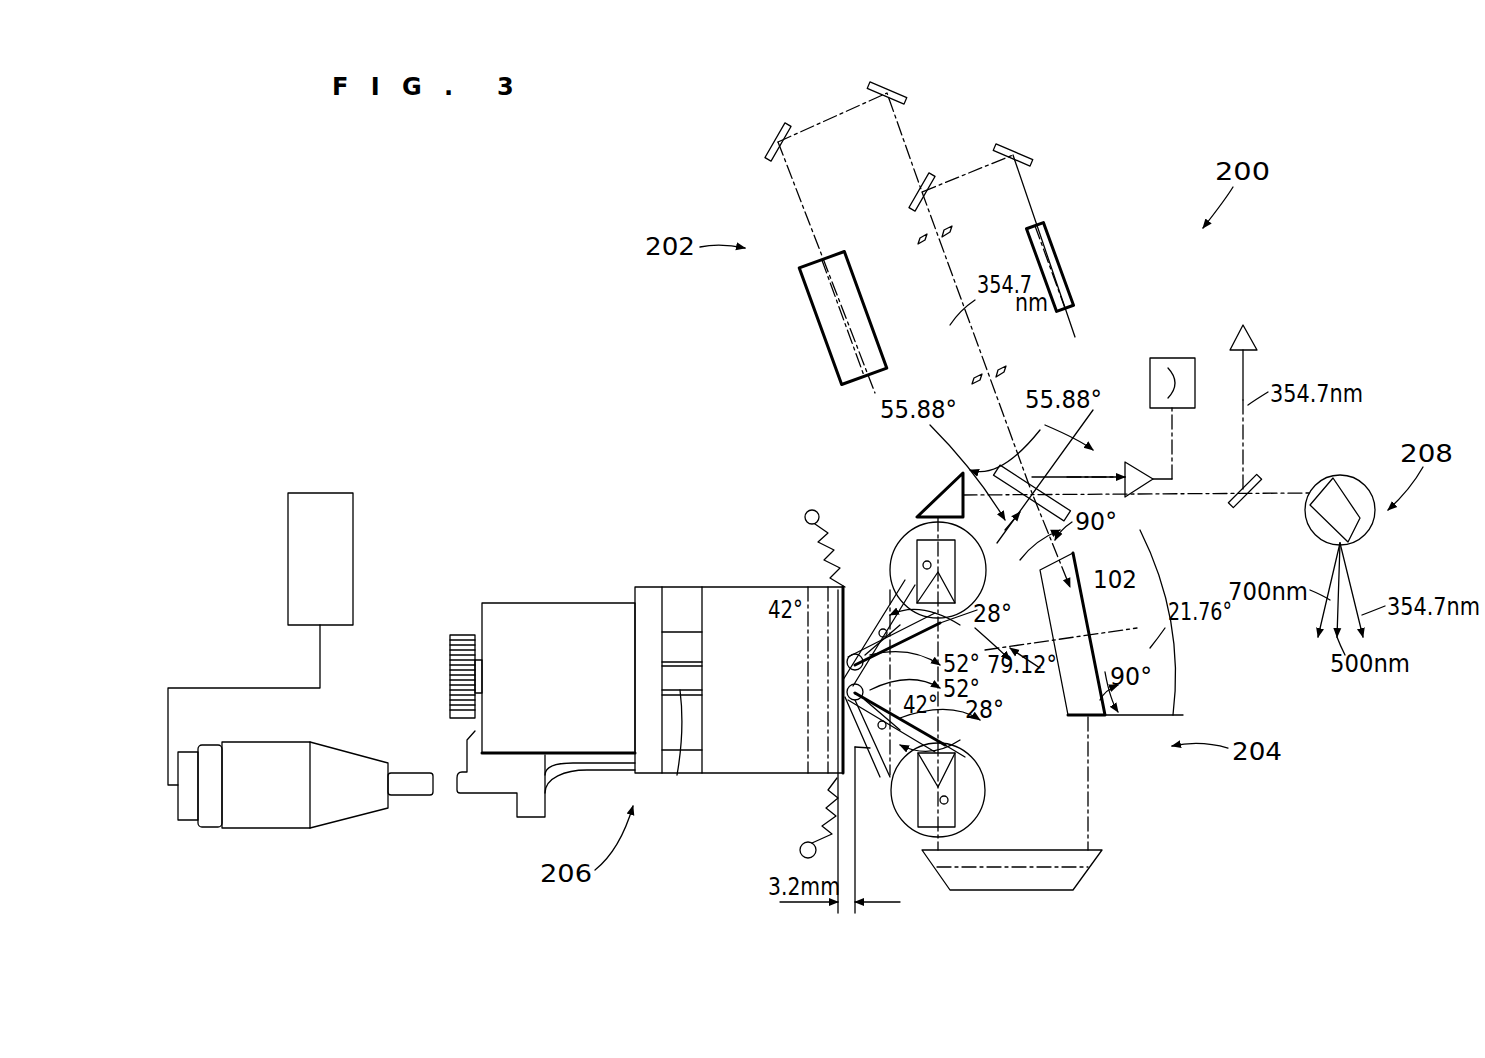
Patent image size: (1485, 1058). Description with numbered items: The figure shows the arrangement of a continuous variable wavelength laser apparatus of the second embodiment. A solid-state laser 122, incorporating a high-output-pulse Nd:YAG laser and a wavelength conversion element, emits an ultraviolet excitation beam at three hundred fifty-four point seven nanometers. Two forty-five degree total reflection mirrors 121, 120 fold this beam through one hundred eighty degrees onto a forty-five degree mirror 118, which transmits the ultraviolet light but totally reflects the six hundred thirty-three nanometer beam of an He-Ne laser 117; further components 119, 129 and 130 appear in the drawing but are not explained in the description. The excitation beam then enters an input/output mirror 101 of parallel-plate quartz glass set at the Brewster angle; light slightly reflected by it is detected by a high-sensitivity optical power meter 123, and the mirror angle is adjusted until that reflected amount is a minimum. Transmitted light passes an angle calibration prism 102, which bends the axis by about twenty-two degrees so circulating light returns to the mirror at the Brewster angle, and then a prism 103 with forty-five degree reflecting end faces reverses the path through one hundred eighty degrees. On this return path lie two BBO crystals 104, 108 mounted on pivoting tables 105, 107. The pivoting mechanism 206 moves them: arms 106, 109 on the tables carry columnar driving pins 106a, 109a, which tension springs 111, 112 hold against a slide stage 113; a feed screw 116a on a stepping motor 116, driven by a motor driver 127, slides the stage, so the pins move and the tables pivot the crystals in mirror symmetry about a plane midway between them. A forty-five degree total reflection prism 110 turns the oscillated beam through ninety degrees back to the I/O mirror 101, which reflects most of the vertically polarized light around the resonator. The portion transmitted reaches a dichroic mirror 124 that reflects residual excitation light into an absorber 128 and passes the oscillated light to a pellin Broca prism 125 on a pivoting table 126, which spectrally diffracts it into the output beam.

The input/output mirror 101 is at (1005, 485).
The angle calibration prism 102 is at (1078, 605).
The prism 103 is at (1055, 890).
The BBO crystal 104 is at (890, 820).
The pivoting table 105 is at (985, 790).
The arm 106 is at (880, 780).
The driving pin 106a is at (845, 697).
The pivoting table 107 is at (1010, 528).
The BBO crystal 108 is at (905, 540).
The arm 109 is at (875, 620).
The driving pin 109a is at (845, 662).
The 45° total reflection prism 110 is at (935, 500).
The tension spring 111 is at (825, 815).
The tension spring 112 is at (820, 535).
The slide stage 113 is at (712, 587).
The stepping motor 116 is at (552, 603).
The feed screw 116a is at (677, 775).
The He-Ne laser 117 is at (1062, 258).
The 45° mirror 118 is at (912, 185).
The mirror 119 is at (1028, 150).
The 45° total reflection mirror 120 is at (900, 91).
The 45° total reflection mirror 121 is at (768, 135).
The solid-state laser 122 is at (815, 332).
The optical power meter 123 is at (1140, 465).
The dichroic mirror 124 is at (1243, 505).
The pellin Broca prism 125 is at (1338, 478).
The pivoting table 126 is at (1318, 482).
The motor driver 127 is at (353, 553).
The absorber 128 is at (1252, 325).
The aperture 129 is at (915, 238).
The aperture 130 is at (1008, 372).
The pivoting mechanism 206 is at (406, 779).